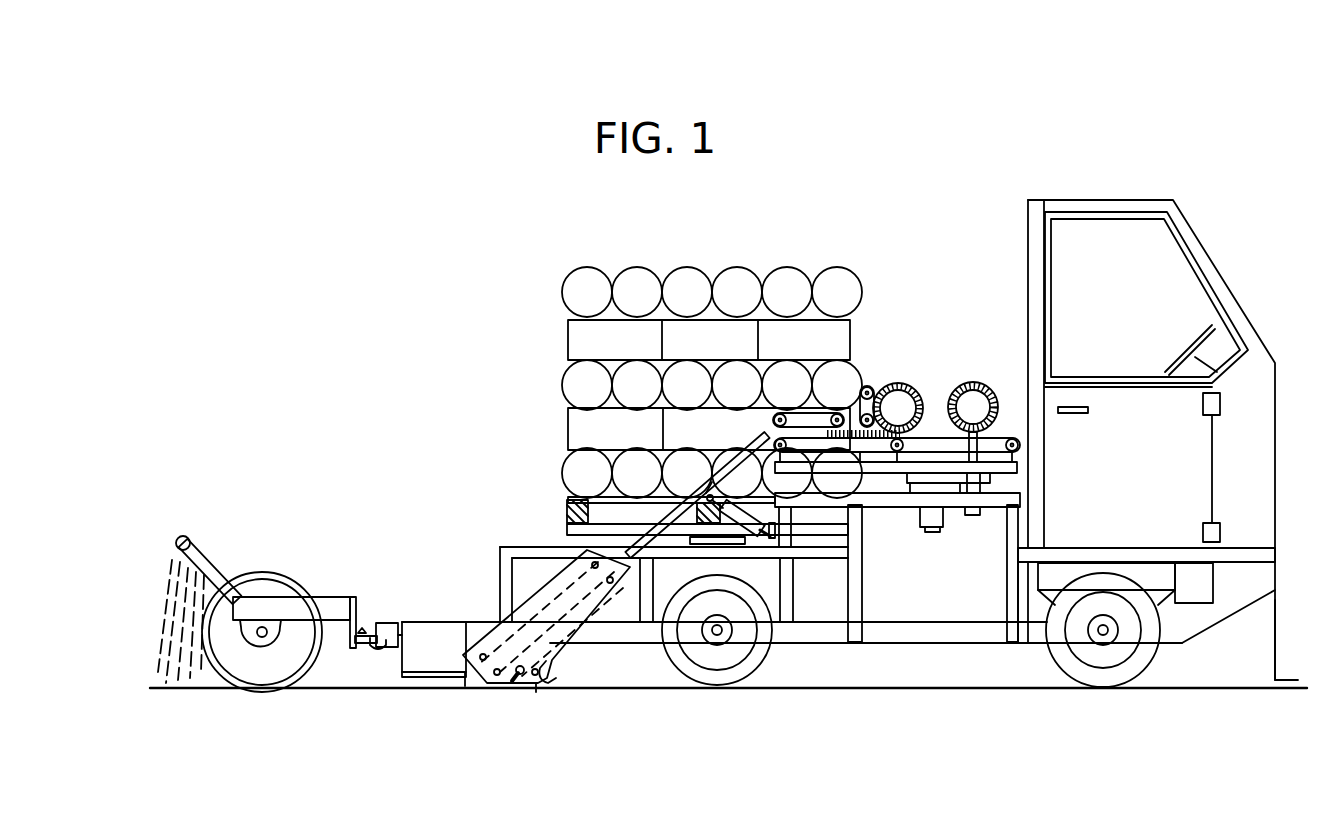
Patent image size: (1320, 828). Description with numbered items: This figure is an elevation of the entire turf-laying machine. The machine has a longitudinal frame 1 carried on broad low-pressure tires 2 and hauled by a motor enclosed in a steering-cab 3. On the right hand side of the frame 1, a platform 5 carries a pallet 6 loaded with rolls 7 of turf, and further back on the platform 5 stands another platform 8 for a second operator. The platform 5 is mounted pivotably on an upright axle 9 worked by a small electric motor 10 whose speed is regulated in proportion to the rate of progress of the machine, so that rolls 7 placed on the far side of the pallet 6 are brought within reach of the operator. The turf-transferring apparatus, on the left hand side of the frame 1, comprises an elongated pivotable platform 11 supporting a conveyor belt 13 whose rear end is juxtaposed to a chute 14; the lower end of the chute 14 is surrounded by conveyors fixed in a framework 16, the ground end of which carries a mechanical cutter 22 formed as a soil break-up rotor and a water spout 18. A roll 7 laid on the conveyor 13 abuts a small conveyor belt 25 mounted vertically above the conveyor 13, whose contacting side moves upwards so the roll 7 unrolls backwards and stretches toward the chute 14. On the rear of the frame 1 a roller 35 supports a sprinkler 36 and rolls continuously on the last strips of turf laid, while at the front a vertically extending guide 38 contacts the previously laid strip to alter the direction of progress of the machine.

The vehicle frame 1 is at (502, 572).
The wheels 2 is at (753, 657).
The driver cab 3 is at (1123, 400).
The platform 5 is at (567, 532).
The pivot bearing block 6 is at (567, 505).
The logs 7 is at (788, 282).
The housing box 8 is at (417, 677).
The hydraulic cylinder 9 is at (700, 538).
The support post 10 is at (730, 568).
The support table 11 is at (885, 463).
The conveyor assembly 13 is at (933, 437).
The loading arm 14 is at (713, 459).
The cutter head 16 is at (563, 647).
The pin 18 is at (518, 676).
The bracket 22 is at (550, 684).
The drive belt 25 is at (868, 385).
The front wheel 35 is at (270, 587).
The spray nozzle 36 is at (198, 558).
The support foot 38 is at (1272, 648).